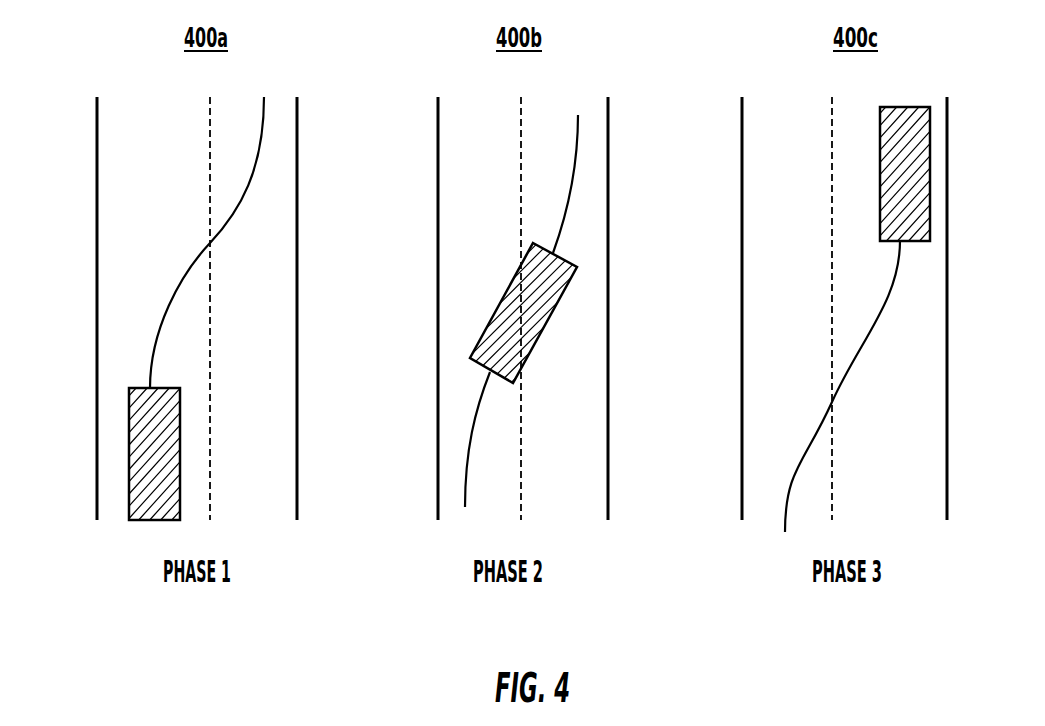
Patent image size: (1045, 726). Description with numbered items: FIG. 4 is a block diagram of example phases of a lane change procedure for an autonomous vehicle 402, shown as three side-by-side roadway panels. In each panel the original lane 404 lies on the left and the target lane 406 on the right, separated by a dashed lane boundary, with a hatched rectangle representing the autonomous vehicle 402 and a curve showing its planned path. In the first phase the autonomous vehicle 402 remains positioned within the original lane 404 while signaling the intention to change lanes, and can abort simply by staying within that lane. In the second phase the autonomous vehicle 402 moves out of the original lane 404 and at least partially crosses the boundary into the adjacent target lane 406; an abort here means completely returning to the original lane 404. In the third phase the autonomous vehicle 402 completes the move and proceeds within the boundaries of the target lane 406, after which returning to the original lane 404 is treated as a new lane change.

The autonomous vehicle 402 is at (481, 314).
The original lane 404 is at (464, 308).
The target lane 406 is at (592, 308).